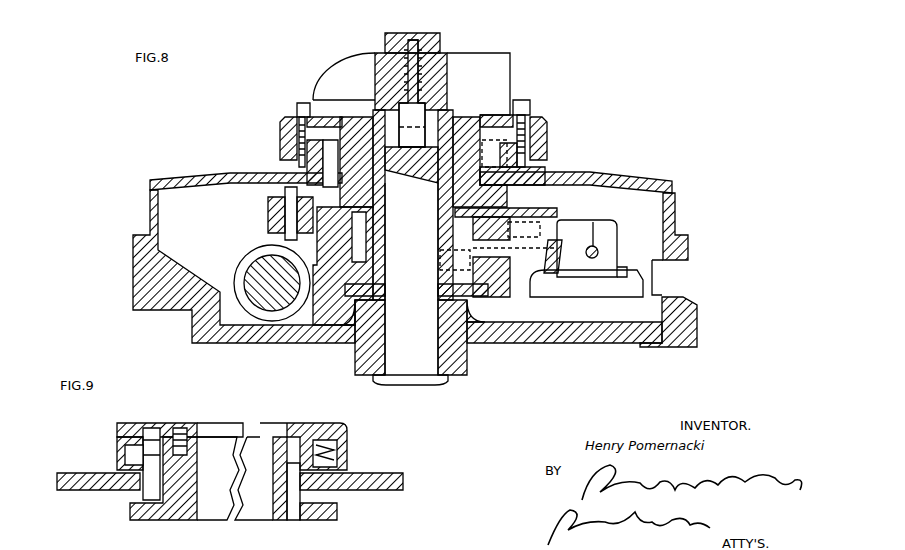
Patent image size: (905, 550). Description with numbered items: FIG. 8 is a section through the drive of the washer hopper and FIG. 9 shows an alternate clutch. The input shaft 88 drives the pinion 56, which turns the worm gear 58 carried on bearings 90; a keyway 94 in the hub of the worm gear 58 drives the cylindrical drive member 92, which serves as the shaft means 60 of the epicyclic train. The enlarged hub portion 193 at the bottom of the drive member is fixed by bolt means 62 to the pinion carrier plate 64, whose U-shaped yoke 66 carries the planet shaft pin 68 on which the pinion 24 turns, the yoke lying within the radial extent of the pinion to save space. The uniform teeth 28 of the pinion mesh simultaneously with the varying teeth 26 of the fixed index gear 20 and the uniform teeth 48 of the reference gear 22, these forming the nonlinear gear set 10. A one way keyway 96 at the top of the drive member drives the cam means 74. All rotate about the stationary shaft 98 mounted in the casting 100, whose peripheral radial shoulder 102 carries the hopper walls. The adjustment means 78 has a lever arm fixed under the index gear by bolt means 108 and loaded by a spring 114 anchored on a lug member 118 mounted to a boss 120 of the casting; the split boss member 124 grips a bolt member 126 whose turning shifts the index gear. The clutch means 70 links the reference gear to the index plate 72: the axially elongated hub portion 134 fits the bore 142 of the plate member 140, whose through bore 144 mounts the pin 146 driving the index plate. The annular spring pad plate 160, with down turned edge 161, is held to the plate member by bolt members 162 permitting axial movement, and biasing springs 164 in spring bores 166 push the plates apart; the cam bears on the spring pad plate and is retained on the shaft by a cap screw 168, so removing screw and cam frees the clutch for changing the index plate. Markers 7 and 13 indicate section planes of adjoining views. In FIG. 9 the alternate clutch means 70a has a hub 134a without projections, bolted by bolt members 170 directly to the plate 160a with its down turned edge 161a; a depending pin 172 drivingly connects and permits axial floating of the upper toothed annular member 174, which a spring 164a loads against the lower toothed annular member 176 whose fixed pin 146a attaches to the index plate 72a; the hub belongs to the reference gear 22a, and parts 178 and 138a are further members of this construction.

In FIG. 8, the section line 7 is at (120, 195).
In FIG. 8, the nonlinear gear set 10 is at (259, 120).
In FIG. 8, the section line 13 is at (213, 200).
In FIG. 8, the index gear 20 is at (505, 248).
In FIG. 8, the reference gear 22 is at (507, 198).
In FIG. 8, the pinion 24 is at (254, 246).
In FIG. 8, the index gear teeth 26 is at (524, 234).
In FIG. 8, the pinion teeth 28 is at (268, 228).
In FIG. 8, the reference gear teeth 48 is at (505, 207).
In FIG. 8, the pinion 56 is at (290, 313).
In FIG. 8, the worm gear 58 is at (412, 337).
In FIG. 8, the shaft means 60 is at (440, 258).
In FIG. 8, the bolt means 62 is at (392, 224).
In FIG. 8, the pinion carrier plate 64 is at (606, 214).
In FIG. 8, the yoke member 66 is at (259, 208).
In FIG. 8, the planet shaft pin 68 is at (258, 283).
In FIG. 8, the clutch means 70 is at (334, 124).
In FIG. 8, the index plate 72 is at (608, 177).
In FIG. 8, the cam means 74 is at (480, 64).
In FIG. 8, the adjustment means 78 is at (545, 297).
In FIG. 8, the input shaft 88 is at (250, 290).
In FIG. 8, the bearings 90 is at (413, 242).
In FIG. 8, the cylindrical drive member 92 is at (410, 215).
In FIG. 8, the keyway 94 is at (416, 286).
In FIG. 8, the one way keyway 96 is at (447, 118).
In FIG. 8, the stationary shaft 98 is at (442, 380).
In FIG. 8, the casting 100 is at (510, 343).
In FIG. 8, the peripheral radial shoulder 102 is at (692, 248).
In FIG. 8, the bolt means 108 is at (507, 311).
In FIG. 8, the spring 114 is at (560, 268).
In FIG. 8, the lug member 118 is at (573, 297).
In FIG. 8, the boss 120 is at (690, 303).
In FIG. 8, the boss member 124 is at (605, 232).
In FIG. 8, the bolt member 126 is at (600, 253).
In FIG. 8, the hub portion 134 is at (490, 81).
In FIG. 8, the plate member 140 is at (532, 165).
In FIG. 8, the bore 142 is at (492, 131).
In FIG. 8, the through bore 144 is at (300, 170).
In FIG. 8, the pin 146 is at (322, 163).
In FIG. 8, the spring pad plate 160 is at (520, 100).
In FIG. 8, the down turned edge 161 is at (560, 150).
In FIG. 8, the bolt members 162 is at (298, 105).
In FIG. 8, the biasing springs 164 is at (493, 153).
In FIG. 8, the spring bores 166 is at (480, 166).
In FIG. 8, the cap screw 168 is at (440, 45).
In FIG. 8, the enlarged hub portion 193 is at (446, 233).
In FIG. 9, the index plate 72a is at (80, 488).
In FIG. 9, the fixed pin 146a is at (148, 495).
In FIG. 9, the pin 172 is at (165, 425).
In FIG. 9, the upper annular toothed member 174 is at (142, 428).
In FIG. 9, the bolt members 170 is at (180, 427).
In FIG. 9, the plate 160a is at (120, 432).
In FIG. 9, the down turned edge 161a is at (118, 445).
In FIG. 9, the lower annular toothed member 176 is at (125, 457).
In FIG. 9, the washer 178 is at (130, 467).
In FIG. 9, the hub 134a is at (218, 478).
In FIG. 9, the column 138a is at (285, 510).
In FIG. 9, the spring 164a is at (325, 428).
In FIG. 9, the reference gear 22a is at (325, 520).
In FIG. 9, the clutch means 70a is at (310, 409).